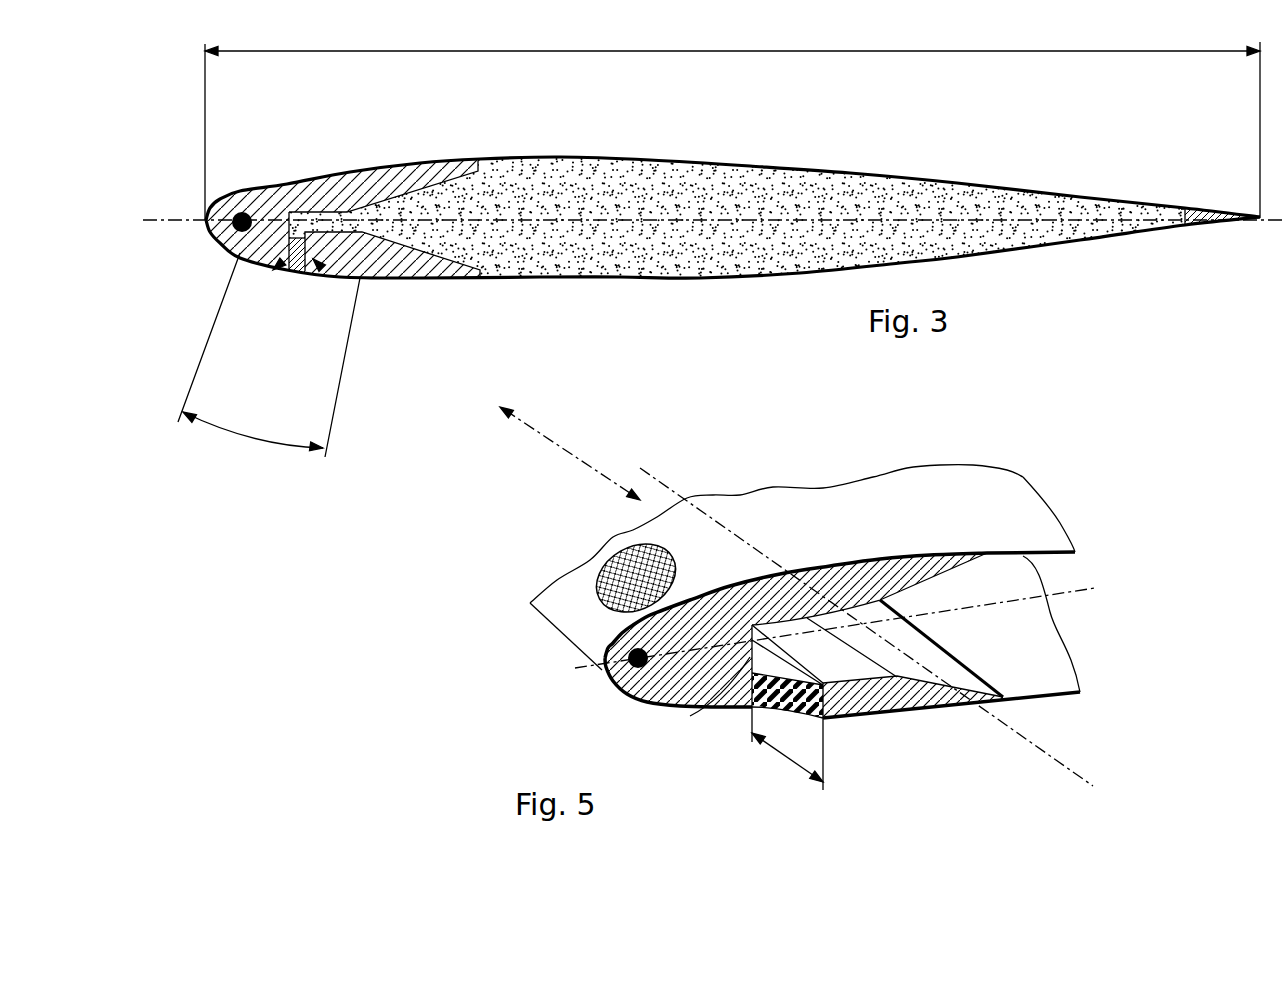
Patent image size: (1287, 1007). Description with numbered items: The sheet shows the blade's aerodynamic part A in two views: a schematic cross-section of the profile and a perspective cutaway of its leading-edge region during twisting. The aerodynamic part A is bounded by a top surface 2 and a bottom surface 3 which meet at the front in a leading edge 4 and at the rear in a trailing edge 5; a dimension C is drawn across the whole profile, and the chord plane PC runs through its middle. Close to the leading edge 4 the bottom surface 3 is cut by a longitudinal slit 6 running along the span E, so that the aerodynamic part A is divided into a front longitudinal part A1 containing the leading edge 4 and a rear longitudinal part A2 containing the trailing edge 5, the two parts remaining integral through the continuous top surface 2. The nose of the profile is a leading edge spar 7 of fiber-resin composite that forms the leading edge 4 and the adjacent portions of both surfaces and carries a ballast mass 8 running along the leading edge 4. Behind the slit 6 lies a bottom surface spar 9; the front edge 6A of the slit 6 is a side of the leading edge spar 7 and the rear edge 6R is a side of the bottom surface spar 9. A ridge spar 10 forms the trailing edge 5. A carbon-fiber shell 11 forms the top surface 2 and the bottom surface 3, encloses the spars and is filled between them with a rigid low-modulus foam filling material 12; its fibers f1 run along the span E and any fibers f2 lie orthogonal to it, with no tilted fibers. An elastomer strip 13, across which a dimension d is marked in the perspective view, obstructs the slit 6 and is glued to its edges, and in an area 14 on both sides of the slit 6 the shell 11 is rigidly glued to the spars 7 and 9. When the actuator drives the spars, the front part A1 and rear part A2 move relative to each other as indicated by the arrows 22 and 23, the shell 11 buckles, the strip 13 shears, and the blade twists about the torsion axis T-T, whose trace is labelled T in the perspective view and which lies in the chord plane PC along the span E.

In FIG. 3, the top surface 2 is at (855, 155).
In FIG. 5, the top surface 2 is at (784, 518).
In FIG. 3, the bottom surface 3 is at (655, 292).
In FIG. 5, the bottom surface 3 is at (870, 727).
In FIG. 3, the leading edge 4 is at (202, 225).
In FIG. 5, the leading edge 4 is at (560, 637).
In FIG. 3, the trailing edge 5 is at (1260, 225).
In FIG. 3, the longitudinal slit 6 is at (273, 247).
In FIG. 5, the longitudinal slit 6 is at (720, 708).
In FIG. 3, the front edge of the slit 6A is at (273, 272).
In FIG. 5, the front edge of the slit 6A is at (708, 712).
In FIG. 3, the rear edge of the slit 6R is at (320, 268).
In FIG. 5, the rear edge of the slit 6R is at (847, 717).
In FIG. 3, the leading edge spar 7 is at (357, 190).
In FIG. 5, the leading edge spar 7 is at (717, 610).
In FIG. 3, the ballast mass 8 is at (222, 240).
In FIG. 5, the ballast mass 8 is at (633, 683).
In FIG. 3, the bottom surface spar 9 is at (380, 258).
In FIG. 5, the bottom surface spar 9 is at (910, 697).
In FIG. 3, the ridge spar 10 is at (1204, 205).
In FIG. 3, the shell 11 is at (1013, 183).
In FIG. 5, the shell 11 is at (993, 505).
In FIG. 3, the filling material 12 is at (817, 240).
In FIG. 3, the strip 13 is at (300, 270).
In FIG. 5, the strip 13 is at (755, 742).
In FIG. 3, the area 14 is at (269, 355).
In FIG. 5, the arrow 22 is at (942, 530).
In FIG. 5, the arrow 23 is at (1070, 722).
In FIG. 3, the aerodynamic part A is at (750, 132).
In FIG. 5, the aerodynamic part A is at (875, 458).
In FIG. 3, the front longitudinal part A1 is at (249, 175).
In FIG. 5, the front longitudinal part A1 is at (612, 524).
In FIG. 3, the rear longitudinal part A2 is at (1133, 257).
In FIG. 5, the rear longitudinal part A2 is at (1100, 694).
In FIG. 3, the chord C is at (732, 122).
In FIG. 3, the chord plane PC is at (665, 218).
In FIG. 3, the torsion axis T-T is at (447, 205).
In FIG. 5, the section plane trace T is at (835, 618).
In FIG. 5, the span E is at (570, 453).
In FIG. 5, the fibers f1 is at (595, 577).
In FIG. 5, the fibers f2 is at (597, 595).
In FIG. 5, the depth d is at (787, 756).